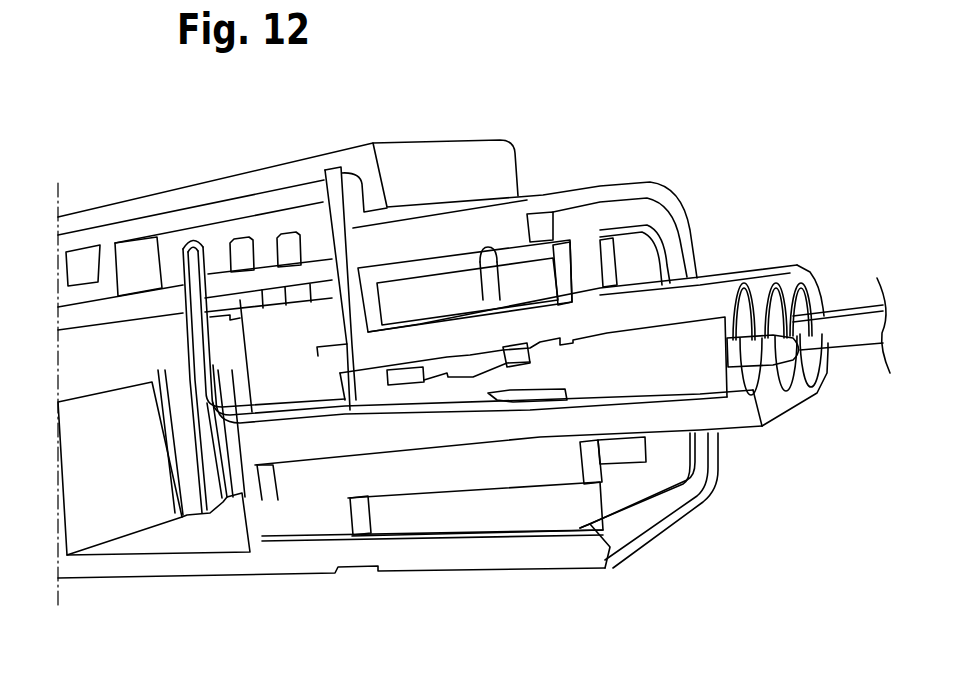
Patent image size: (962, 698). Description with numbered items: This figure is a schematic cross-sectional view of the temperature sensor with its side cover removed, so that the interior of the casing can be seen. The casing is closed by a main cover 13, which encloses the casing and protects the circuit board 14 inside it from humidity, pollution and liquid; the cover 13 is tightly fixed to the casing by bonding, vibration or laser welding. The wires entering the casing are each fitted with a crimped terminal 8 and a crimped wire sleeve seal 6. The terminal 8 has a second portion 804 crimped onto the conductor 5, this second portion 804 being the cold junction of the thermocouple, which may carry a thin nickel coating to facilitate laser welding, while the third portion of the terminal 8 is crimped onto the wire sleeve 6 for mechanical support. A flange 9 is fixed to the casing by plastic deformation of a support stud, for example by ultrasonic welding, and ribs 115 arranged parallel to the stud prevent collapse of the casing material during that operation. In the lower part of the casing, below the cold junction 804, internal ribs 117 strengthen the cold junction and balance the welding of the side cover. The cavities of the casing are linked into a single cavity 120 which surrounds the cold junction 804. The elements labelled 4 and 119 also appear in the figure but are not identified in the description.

The main cover 13 is at (115, 207).
The wall 4 is at (190, 234).
The circuit board 14 is at (267, 274).
The second portion 804 is at (447, 362).
The conductor 5 is at (470, 360).
The wire sleeve seal 6 is at (704, 340).
The terminal 8 is at (185, 320).
The flange 9 is at (232, 366).
The ribs 115 is at (333, 518).
The single cavity 120 is at (482, 508).
The internal ribs 117 is at (568, 477).
The tube 119 is at (732, 420).